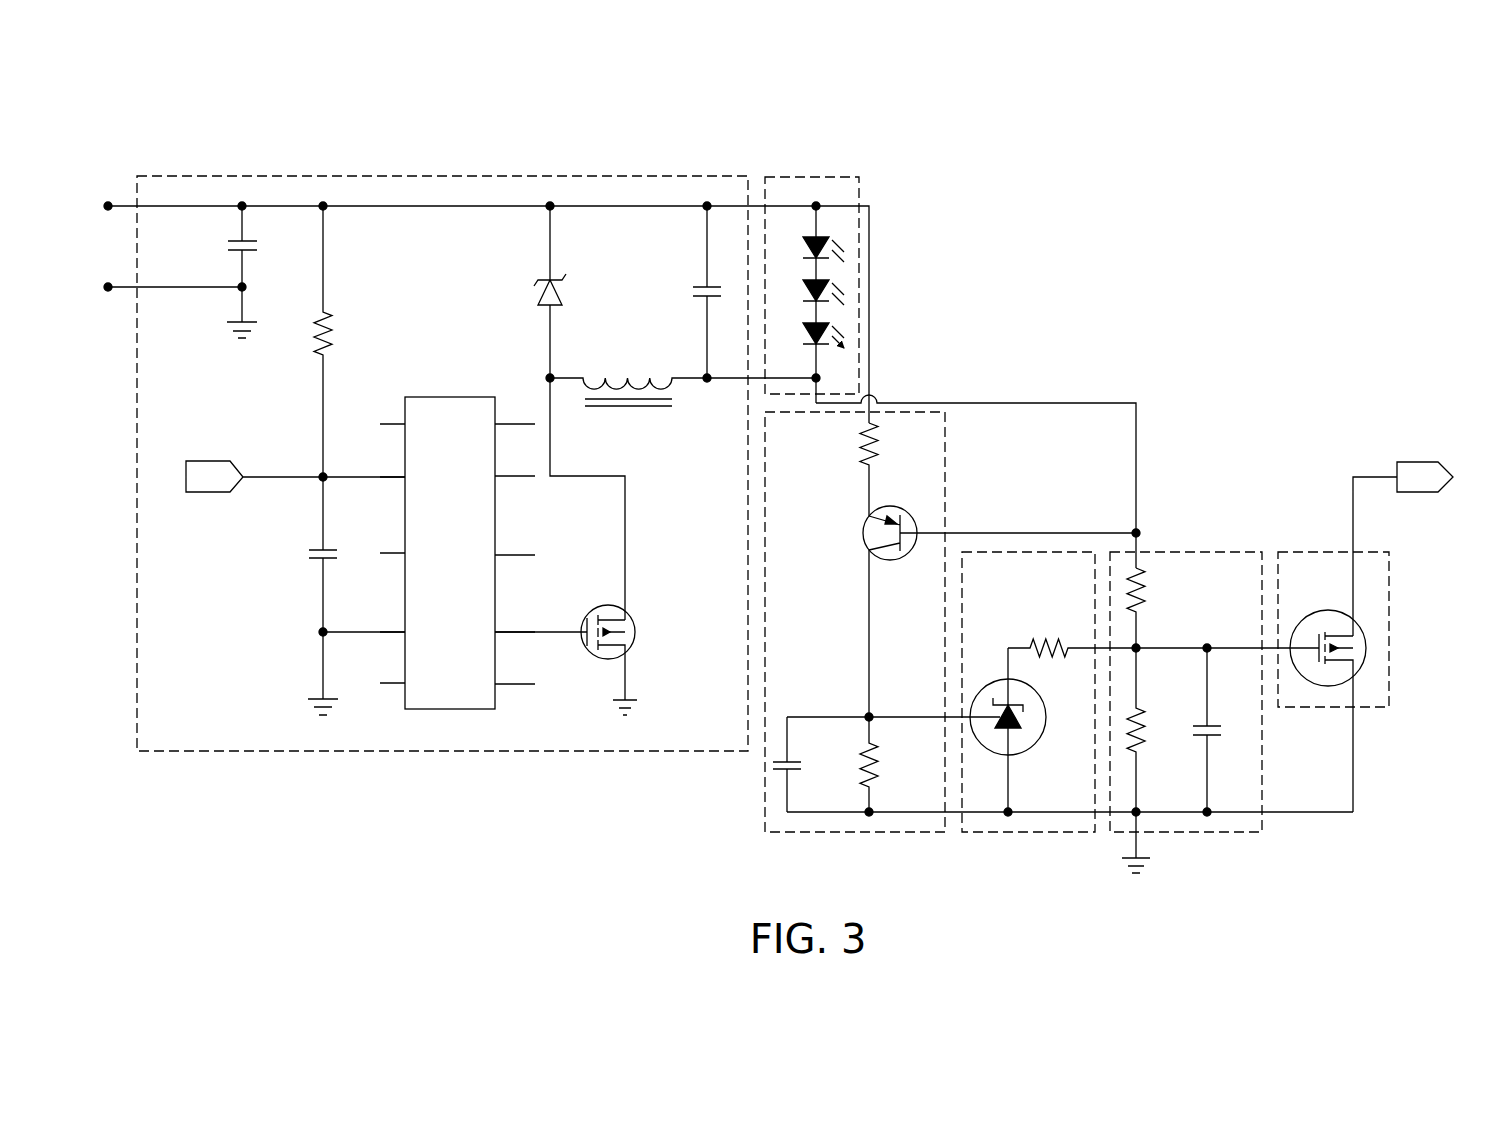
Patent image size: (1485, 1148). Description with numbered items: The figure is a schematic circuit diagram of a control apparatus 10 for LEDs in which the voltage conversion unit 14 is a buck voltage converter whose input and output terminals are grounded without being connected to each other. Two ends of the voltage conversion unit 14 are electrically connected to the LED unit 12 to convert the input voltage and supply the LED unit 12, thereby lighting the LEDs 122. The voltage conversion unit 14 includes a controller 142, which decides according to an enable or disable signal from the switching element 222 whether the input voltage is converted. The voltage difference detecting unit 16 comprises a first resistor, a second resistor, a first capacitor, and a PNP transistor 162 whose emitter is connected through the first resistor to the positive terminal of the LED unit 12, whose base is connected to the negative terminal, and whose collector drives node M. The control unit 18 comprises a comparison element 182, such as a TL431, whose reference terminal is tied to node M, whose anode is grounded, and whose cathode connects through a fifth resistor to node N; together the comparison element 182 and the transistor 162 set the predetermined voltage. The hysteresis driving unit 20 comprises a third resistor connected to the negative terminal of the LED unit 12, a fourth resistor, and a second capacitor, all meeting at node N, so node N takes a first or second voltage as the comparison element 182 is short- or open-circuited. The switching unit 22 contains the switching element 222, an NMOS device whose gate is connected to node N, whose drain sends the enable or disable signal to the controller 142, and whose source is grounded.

The control apparatus for LEDs 10 is at (1436, 118).
The LED unit 12 is at (852, 177).
The LEDs 122 is at (808, 230).
The voltage conversion unit 14 is at (415, 176).
The controller 142 is at (447, 709).
The voltage difference detecting unit 16 is at (855, 835).
The transistor 162 is at (905, 509).
The control unit 18 is at (975, 835).
The comparison element 182 is at (1035, 746).
The hysteresis driving unit 20 is at (1215, 835).
The switching unit 22 is at (1390, 678).
The switching element 222 is at (1367, 648).